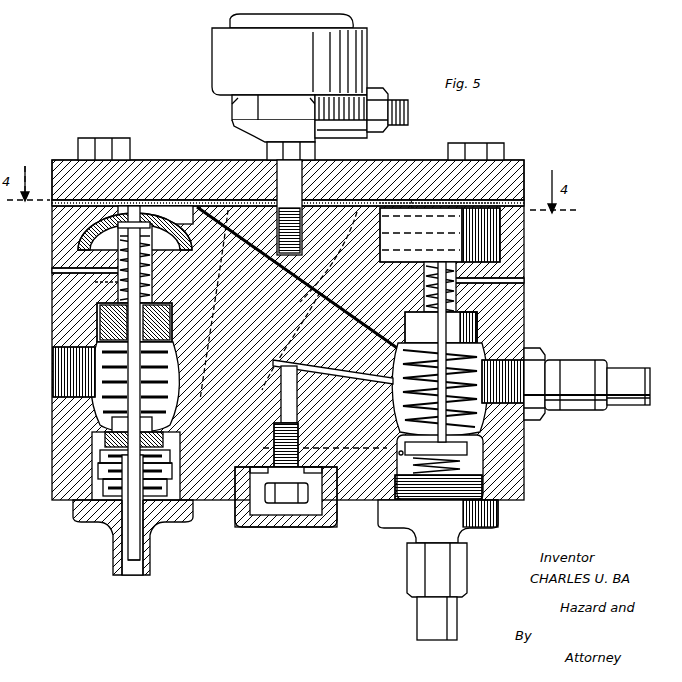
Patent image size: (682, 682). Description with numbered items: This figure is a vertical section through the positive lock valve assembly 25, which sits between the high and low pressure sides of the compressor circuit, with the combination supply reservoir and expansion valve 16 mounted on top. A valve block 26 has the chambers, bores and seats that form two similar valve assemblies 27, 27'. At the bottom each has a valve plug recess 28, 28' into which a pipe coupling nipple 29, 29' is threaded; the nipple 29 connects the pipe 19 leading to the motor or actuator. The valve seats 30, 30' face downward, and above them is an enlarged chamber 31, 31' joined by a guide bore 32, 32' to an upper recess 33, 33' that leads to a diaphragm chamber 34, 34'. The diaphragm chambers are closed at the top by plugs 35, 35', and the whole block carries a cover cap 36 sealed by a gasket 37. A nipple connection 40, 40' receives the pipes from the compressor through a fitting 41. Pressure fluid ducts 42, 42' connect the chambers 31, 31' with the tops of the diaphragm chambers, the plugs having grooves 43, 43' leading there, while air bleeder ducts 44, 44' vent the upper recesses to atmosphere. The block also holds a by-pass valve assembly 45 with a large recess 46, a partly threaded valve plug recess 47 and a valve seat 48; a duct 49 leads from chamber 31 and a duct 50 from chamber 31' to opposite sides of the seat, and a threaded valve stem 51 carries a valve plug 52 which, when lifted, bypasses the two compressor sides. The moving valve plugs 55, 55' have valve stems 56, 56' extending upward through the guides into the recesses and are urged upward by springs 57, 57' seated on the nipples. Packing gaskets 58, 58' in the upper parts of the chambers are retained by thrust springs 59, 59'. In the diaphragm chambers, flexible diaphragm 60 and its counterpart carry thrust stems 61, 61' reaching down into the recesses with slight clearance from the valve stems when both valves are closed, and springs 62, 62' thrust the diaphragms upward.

The combination supply reservoir and expansion valve 16 is at (206, 27).
The pipe 19 is at (135, 572).
The positive lock valve assembly 25 is at (98, 409).
The valve block 26 is at (509, 310).
The valve assembly 27 is at (78, 297).
The valve assembly 27' is at (540, 315).
The valve plug recess 28 is at (92, 470).
The valve plug recess 28' is at (474, 487).
The pipe coupling nipple 29 is at (111, 515).
The pipe coupling nipple 29' is at (440, 570).
The valve seat 30 is at (93, 471).
The valve seat 30' is at (477, 478).
The enlarged chamber 31 is at (55, 372).
The enlarged chamber 31' is at (523, 365).
The guide bore 32 is at (92, 322).
The guide bore 32' is at (535, 286).
The upper recess 33 is at (69, 274).
The upper recess 33' is at (477, 236).
The diaphragm chamber 34 is at (105, 232).
The diaphragm chamber 34' is at (477, 235).
The plug 35 is at (83, 161).
The plug 35' is at (508, 159).
The cover cap 36 is at (181, 176).
The gasket 37 is at (330, 215).
The nipple connection 40 is at (58, 405).
The nipple connection 40' is at (587, 409).
The pipe fitting 41 is at (548, 353).
The pressure fluid duct 42 is at (257, 193).
The pressure fluid duct 42' is at (415, 202).
The groove 43 is at (288, 164).
The groove 43' is at (440, 162).
The air bleeder duct 44 is at (62, 291).
The air bleeder duct 44' is at (515, 268).
The by-pass valve assembly 45 is at (278, 532).
The large recess 46 is at (237, 532).
The valve plug recess 47 is at (336, 524).
The valve seat 48 is at (222, 505).
The duct 49 is at (206, 502).
The duct 50 is at (345, 440).
The threaded valve stem 51 is at (316, 504).
The valve plug 52 is at (240, 526).
The valve plug 55 is at (96, 418).
The valve plug 55' is at (471, 428).
The valve stem 56 is at (98, 465).
The valve stem 56' is at (489, 447).
The spring 57 is at (110, 383).
The spring 57' is at (404, 419).
The packing gasket 58 is at (92, 326).
The packing gasket 58' is at (441, 327).
The thrust spring 59 is at (80, 409).
The thrust spring 59' is at (482, 451).
The diaphragm 60 is at (80, 238).
The thrust stem 61 is at (82, 270).
The thrust stem 61' is at (419, 275).
The spring 62 is at (84, 275).
The spring 62' is at (441, 291).